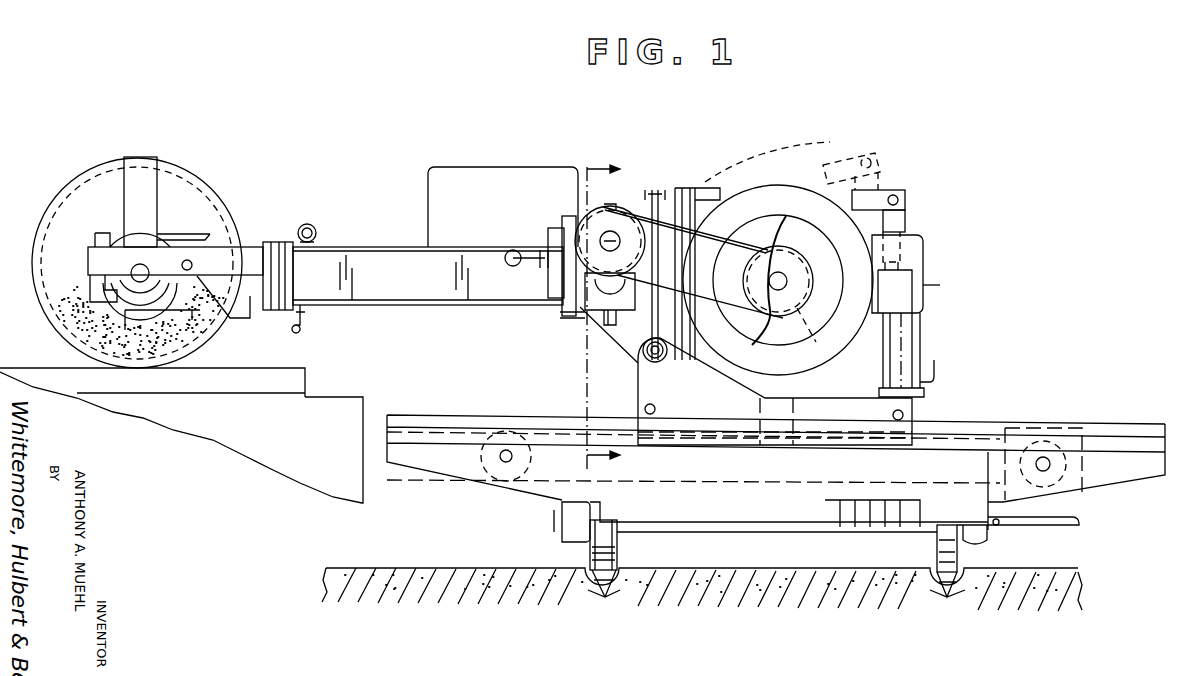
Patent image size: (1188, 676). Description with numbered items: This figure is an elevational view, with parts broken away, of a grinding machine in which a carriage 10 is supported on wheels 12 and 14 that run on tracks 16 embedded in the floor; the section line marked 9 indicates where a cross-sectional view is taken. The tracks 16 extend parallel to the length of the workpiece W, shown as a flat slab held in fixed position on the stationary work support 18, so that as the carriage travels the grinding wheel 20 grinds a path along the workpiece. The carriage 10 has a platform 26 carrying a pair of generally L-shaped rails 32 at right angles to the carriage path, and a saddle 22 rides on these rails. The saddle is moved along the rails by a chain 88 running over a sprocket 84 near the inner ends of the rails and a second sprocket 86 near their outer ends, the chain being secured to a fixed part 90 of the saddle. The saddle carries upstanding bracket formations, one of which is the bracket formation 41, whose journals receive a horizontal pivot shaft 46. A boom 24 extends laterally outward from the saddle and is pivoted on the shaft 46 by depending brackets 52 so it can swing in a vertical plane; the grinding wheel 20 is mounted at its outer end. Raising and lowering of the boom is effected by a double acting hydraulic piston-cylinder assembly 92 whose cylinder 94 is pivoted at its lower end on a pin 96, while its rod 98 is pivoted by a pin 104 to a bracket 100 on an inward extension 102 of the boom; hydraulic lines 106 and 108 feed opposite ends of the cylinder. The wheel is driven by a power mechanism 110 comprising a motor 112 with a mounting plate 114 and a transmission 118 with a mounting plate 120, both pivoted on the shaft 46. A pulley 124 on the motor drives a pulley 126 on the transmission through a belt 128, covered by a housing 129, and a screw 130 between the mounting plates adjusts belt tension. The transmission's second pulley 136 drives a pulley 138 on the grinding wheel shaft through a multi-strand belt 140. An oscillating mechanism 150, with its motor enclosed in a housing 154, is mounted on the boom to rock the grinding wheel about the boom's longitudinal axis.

The carriage 10 is at (1040, 388).
The wheel 12 is at (958, 562).
The wheel 14 is at (617, 556).
The tracks 16 is at (602, 593).
The stationary work support 18 is at (255, 455).
The workpiece W is at (290, 368).
The grinding wheel 20 is at (56, 318).
The saddle 22 is at (644, 409).
The boom 24 is at (392, 268).
The platform 26 is at (450, 462).
The rails 32 is at (1098, 432).
The bracket formation 41 is at (642, 384).
The pivot shaft 46 is at (660, 358).
The depending brackets 52 is at (612, 320).
The sprocket 84 is at (1070, 468).
The second sprocket 86 is at (492, 476).
The chain 88 is at (708, 488).
The fixed part 90 is at (790, 402).
The double acting hydraulic piston-cylinder assembly 92 is at (922, 338).
The cylinder 94 is at (915, 358).
The pin 96 is at (905, 412).
The rod 98 is at (918, 240).
The bracket 100 is at (905, 198).
The inward extension 102 is at (828, 152).
The pin 104 is at (900, 200).
The hydraulic line 106 is at (935, 283).
The hydraulic line 108 is at (936, 378).
The power mechanism 110 is at (688, 186).
The motor 112 is at (748, 190).
The mounting plate 114 is at (694, 198).
The transmission 118 is at (556, 228).
The mounting plate 120 is at (655, 190).
The pulley 124 is at (819, 333).
The pulley 126 is at (655, 265).
The belt 128 is at (735, 298).
The housing 129 is at (795, 226).
The screw 130 is at (642, 226).
The second pulley 136 is at (625, 346).
The pulley 138 is at (141, 323).
The belt 140 is at (173, 312).
The oscillating mechanism 150 is at (562, 166).
The housing 154 is at (470, 182).
The section line 9- 9 is at (603, 312).